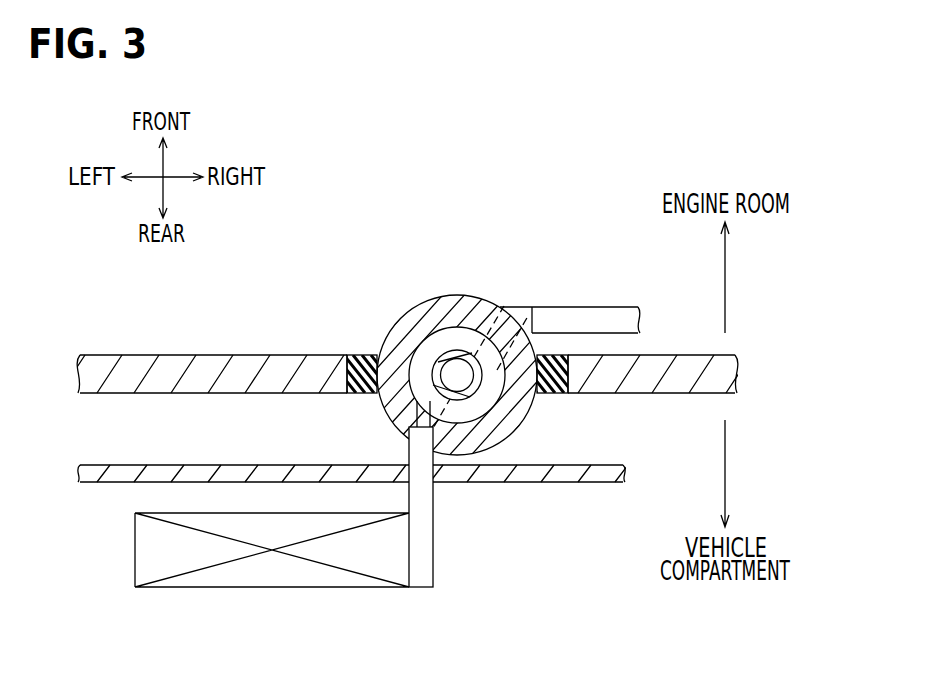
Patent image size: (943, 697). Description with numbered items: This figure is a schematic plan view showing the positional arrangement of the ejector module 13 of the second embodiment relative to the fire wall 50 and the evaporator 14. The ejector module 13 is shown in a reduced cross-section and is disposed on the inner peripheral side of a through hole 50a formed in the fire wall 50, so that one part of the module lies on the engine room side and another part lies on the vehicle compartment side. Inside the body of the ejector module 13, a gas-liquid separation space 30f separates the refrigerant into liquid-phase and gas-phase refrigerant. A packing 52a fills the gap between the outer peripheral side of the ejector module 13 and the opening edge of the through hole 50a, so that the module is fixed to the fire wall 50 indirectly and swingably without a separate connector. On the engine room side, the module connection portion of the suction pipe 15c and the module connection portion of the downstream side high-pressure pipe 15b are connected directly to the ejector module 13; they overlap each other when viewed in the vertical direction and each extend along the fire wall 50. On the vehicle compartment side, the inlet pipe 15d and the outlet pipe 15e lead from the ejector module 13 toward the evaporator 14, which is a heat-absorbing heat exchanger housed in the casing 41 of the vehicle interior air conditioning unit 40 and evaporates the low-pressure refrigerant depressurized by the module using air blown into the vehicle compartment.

The ejector module 13 is at (463, 277).
The gas-liquid separation space 30f is at (438, 345).
The packing 52a is at (370, 355).
The through hole 50a is at (350, 355).
The suction pipe 15c is at (577, 281).
The downstream side high-pressure pipe 15b is at (585, 307).
The fire wall 50 is at (710, 375).
The casing 41 is at (344, 444).
The vehicle interior air conditioning unit 40 is at (172, 468).
The inlet pipe 15d is at (515, 494).
The outlet pipe 15e is at (435, 498).
The evaporator 14 is at (275, 572).